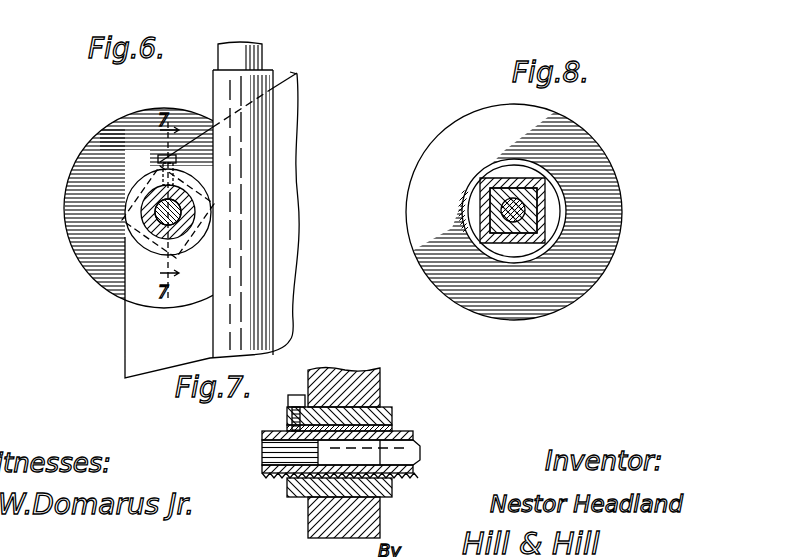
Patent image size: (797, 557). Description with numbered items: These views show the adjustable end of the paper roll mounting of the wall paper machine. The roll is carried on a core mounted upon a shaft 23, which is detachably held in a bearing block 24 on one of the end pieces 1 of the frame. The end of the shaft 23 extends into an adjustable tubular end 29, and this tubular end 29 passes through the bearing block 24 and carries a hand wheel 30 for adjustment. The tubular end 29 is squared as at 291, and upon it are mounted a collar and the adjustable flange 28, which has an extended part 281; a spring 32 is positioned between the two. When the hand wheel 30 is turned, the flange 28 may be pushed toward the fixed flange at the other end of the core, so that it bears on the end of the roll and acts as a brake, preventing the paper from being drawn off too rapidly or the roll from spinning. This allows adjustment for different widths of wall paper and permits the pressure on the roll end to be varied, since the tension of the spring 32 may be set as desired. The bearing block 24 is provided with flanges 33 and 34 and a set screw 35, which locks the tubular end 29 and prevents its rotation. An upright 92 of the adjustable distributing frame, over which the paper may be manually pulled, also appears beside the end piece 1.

In FIG. 6, the end piece 1 is at (140, 338).
In FIG. 7, the end piece 1 is at (373, 376).
In FIG. 6, the upright 92 is at (248, 62).
In FIG. 6, the shaft 23 is at (154, 212).
In FIG. 7, the shaft 23 is at (414, 446).
In FIG. 8, the shaft 23 is at (546, 220).
In FIG. 6, the bearing block 24 is at (176, 246).
In FIG. 7, the bearing block 24 is at (386, 410).
In FIG. 8, the adjustable flange 28 is at (606, 204).
In FIG. 8, the extended part 281 is at (522, 242).
In FIG. 6, the tubular end 29 is at (188, 216).
In FIG. 7, the tubular end 29 is at (398, 480).
In FIG. 8, the squared portion 291 is at (560, 180).
In FIG. 6, the hand wheel 30 is at (70, 200).
In FIG. 8, the spring 32 is at (512, 265).
In FIG. 6, the flange 33 is at (146, 188).
In FIG. 7, the flange 33 is at (395, 428).
In FIG. 7, the flange 34 is at (296, 497).
In FIG. 6, the set screw 35 is at (158, 158).
In FIG. 7, the set screw 35 is at (294, 395).